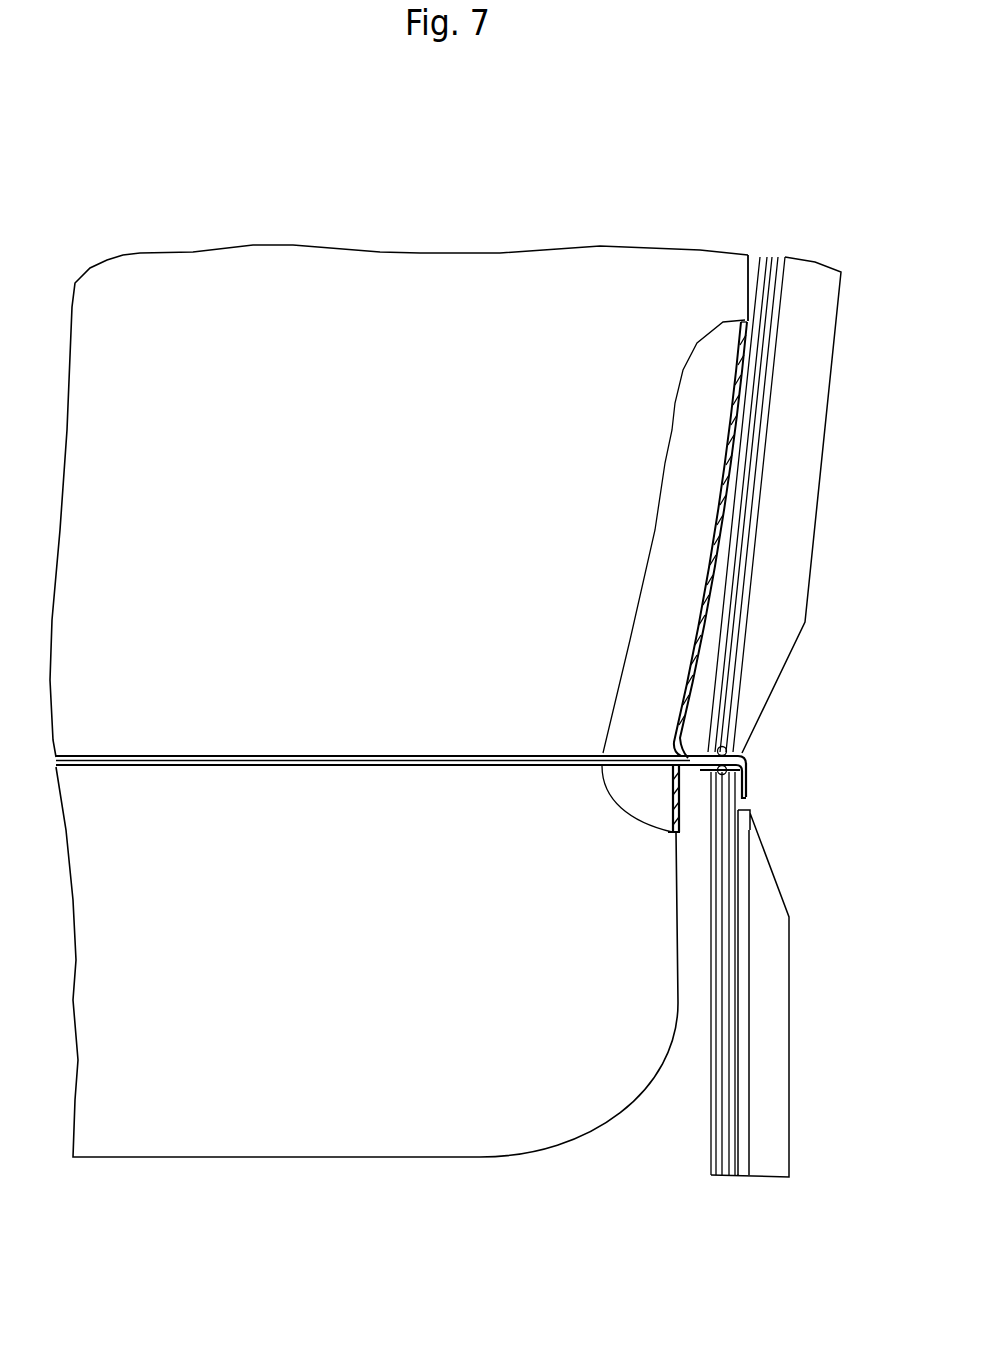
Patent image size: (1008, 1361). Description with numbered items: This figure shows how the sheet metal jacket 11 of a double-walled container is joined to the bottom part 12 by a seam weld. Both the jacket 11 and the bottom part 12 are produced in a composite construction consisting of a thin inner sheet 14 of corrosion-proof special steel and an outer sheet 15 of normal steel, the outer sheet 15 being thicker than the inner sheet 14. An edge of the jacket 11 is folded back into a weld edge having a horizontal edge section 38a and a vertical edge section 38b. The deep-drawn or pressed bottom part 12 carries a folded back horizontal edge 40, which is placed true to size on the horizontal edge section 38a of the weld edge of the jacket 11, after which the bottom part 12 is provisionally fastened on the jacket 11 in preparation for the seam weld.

The jacket 11 is at (262, 295).
The bottom part 12 is at (179, 1122).
The inner sheet 14 is at (724, 458).
The outer sheet 15 is at (716, 527).
The horizontal edge section 38a is at (729, 754).
The vertical edge section 38b is at (750, 796).
The folded back horizontal edge 40 is at (690, 745).